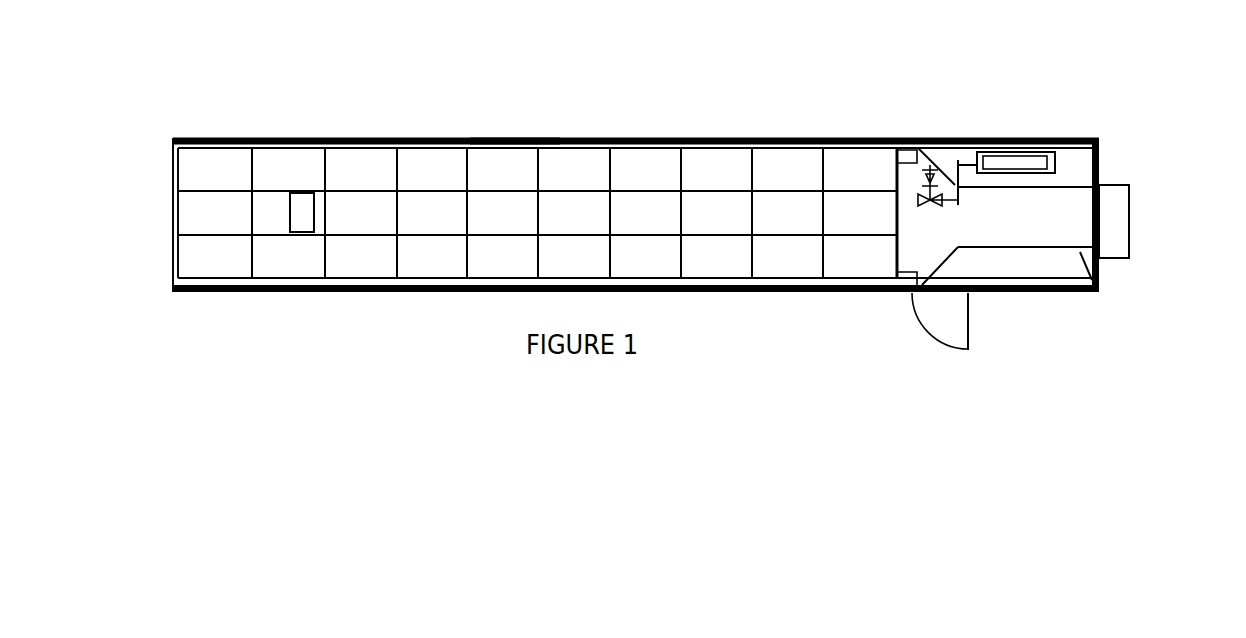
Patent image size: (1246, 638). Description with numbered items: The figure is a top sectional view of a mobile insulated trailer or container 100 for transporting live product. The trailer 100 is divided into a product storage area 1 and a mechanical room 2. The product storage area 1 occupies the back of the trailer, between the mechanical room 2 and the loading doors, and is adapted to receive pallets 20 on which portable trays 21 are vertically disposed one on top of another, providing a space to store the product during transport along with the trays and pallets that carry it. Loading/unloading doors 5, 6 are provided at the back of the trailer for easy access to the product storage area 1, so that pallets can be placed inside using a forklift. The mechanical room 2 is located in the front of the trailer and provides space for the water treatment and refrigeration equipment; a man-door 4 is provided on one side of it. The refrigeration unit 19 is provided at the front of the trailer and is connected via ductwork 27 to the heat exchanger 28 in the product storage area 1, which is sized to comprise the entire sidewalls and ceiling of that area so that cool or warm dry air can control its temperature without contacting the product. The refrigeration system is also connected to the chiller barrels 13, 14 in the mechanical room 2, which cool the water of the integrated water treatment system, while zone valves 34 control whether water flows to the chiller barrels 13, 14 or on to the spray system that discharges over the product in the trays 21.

The product storage area 1 is at (497, 138).
The mechanical room 2 is at (962, 138).
The man-door 4 is at (975, 320).
The loading/unloading door 5 is at (173, 250).
The loading/unloading door 6 is at (173, 170).
The chiller barrel 13 is at (1080, 98).
The chiller barrel 14 is at (1040, 138).
The refrigeration unit 19 is at (1121, 222).
The pallet 20 is at (267, 185).
The tray 21 is at (300, 233).
The ductwork 27 is at (1100, 285).
The heat exchanger 28 is at (787, 138).
The zone valve 34 is at (920, 138).
The mobile insulated trailer 100 is at (1098, 138).